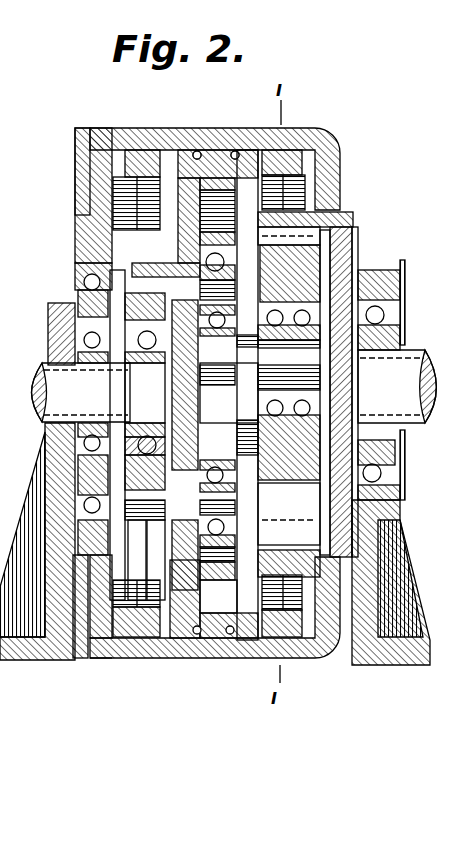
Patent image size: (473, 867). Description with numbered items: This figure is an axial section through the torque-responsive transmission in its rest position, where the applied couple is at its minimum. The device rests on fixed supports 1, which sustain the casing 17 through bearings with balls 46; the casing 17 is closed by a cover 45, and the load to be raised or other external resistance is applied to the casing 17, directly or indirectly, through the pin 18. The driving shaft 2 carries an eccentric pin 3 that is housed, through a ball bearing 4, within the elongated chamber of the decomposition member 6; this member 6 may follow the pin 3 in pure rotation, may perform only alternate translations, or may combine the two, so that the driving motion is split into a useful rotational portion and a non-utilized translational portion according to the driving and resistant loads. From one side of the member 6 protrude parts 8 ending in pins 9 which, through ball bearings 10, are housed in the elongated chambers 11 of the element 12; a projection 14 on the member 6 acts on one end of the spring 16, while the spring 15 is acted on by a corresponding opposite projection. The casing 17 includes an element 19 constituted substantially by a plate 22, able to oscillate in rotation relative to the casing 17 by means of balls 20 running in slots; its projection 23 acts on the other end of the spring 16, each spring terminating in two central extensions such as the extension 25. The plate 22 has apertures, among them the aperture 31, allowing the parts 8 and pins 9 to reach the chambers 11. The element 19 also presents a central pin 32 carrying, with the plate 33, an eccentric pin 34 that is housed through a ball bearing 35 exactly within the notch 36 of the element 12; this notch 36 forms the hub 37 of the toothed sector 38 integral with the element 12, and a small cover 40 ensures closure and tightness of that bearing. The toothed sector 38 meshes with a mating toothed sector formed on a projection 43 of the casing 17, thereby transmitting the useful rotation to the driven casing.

The fixed supports 1 is at (50, 310).
The driving shaft 2 is at (50, 406).
The eccentric pin 3 is at (145, 391).
The ball bearing 4 is at (125, 452).
The decomposition member 6 is at (112, 268).
The parts 8 is at (170, 518).
The pins 9 is at (240, 292).
The ball bearings 10 is at (213, 256).
The chambers 11 is at (225, 213).
The element 12 is at (210, 186).
The projection 14 is at (40, 376).
The spring 15 is at (116, 150).
The spring 16 is at (284, 150).
The casing 17 is at (105, 660).
The pin 18 is at (400, 344).
The element 19 is at (192, 150).
The balls 20 is at (236, 150).
The plate 22 is at (200, 600).
The projection 23 is at (48, 330).
The extension 25 is at (48, 298).
The aperture 31 is at (162, 516).
The central pin 32 is at (228, 388).
The plate 33 is at (236, 414).
The eccentric pin 34 is at (350, 382).
The ball bearing 35 is at (326, 278).
The notch 36 is at (400, 500).
The hub 37 is at (296, 493).
The toothed sector 38 is at (330, 224).
The small cover 40 is at (356, 286).
The projection 43 is at (289, 552).
The cover 45 is at (78, 174).
The balls 46 is at (80, 276).